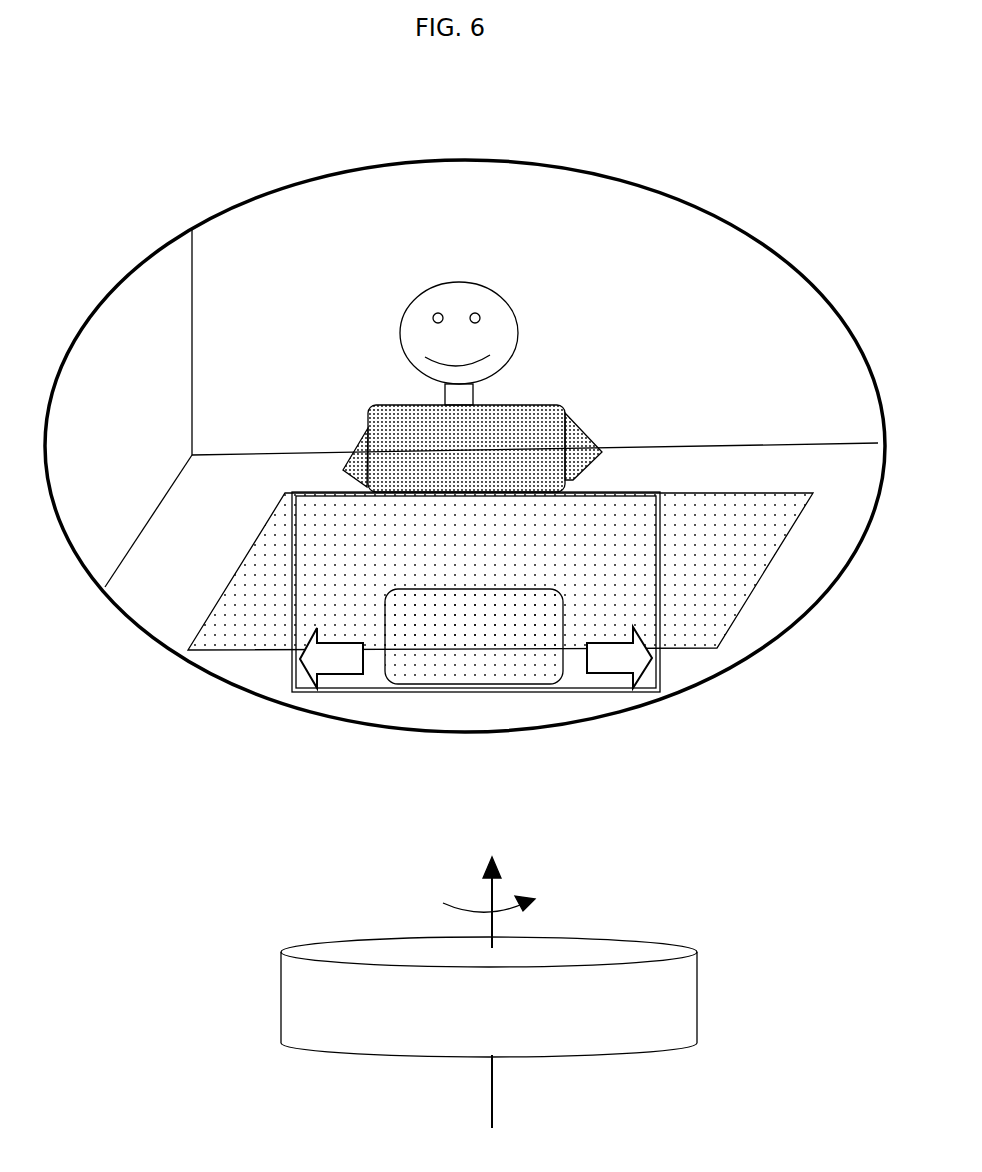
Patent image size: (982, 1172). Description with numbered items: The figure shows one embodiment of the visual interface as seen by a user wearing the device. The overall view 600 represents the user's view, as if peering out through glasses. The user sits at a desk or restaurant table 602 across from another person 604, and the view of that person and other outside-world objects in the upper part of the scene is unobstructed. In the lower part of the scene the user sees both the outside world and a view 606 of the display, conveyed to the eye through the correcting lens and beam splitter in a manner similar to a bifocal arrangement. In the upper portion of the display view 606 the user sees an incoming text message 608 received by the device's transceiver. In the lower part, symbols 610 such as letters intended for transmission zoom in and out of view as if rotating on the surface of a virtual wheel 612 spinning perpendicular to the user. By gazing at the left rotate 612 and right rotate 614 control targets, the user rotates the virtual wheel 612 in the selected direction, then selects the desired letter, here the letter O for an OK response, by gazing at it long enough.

The overall view 600 is at (207, 209).
The desk or restaurant table 602 is at (248, 532).
The other person 604 is at (573, 408).
The view of the display 606 is at (648, 481).
The text message 608 is at (633, 522).
The symbols 610 is at (480, 667).
The virtual wheel / left rotate control target 612 is at (352, 678).
The right rotate control target 614 is at (610, 677).